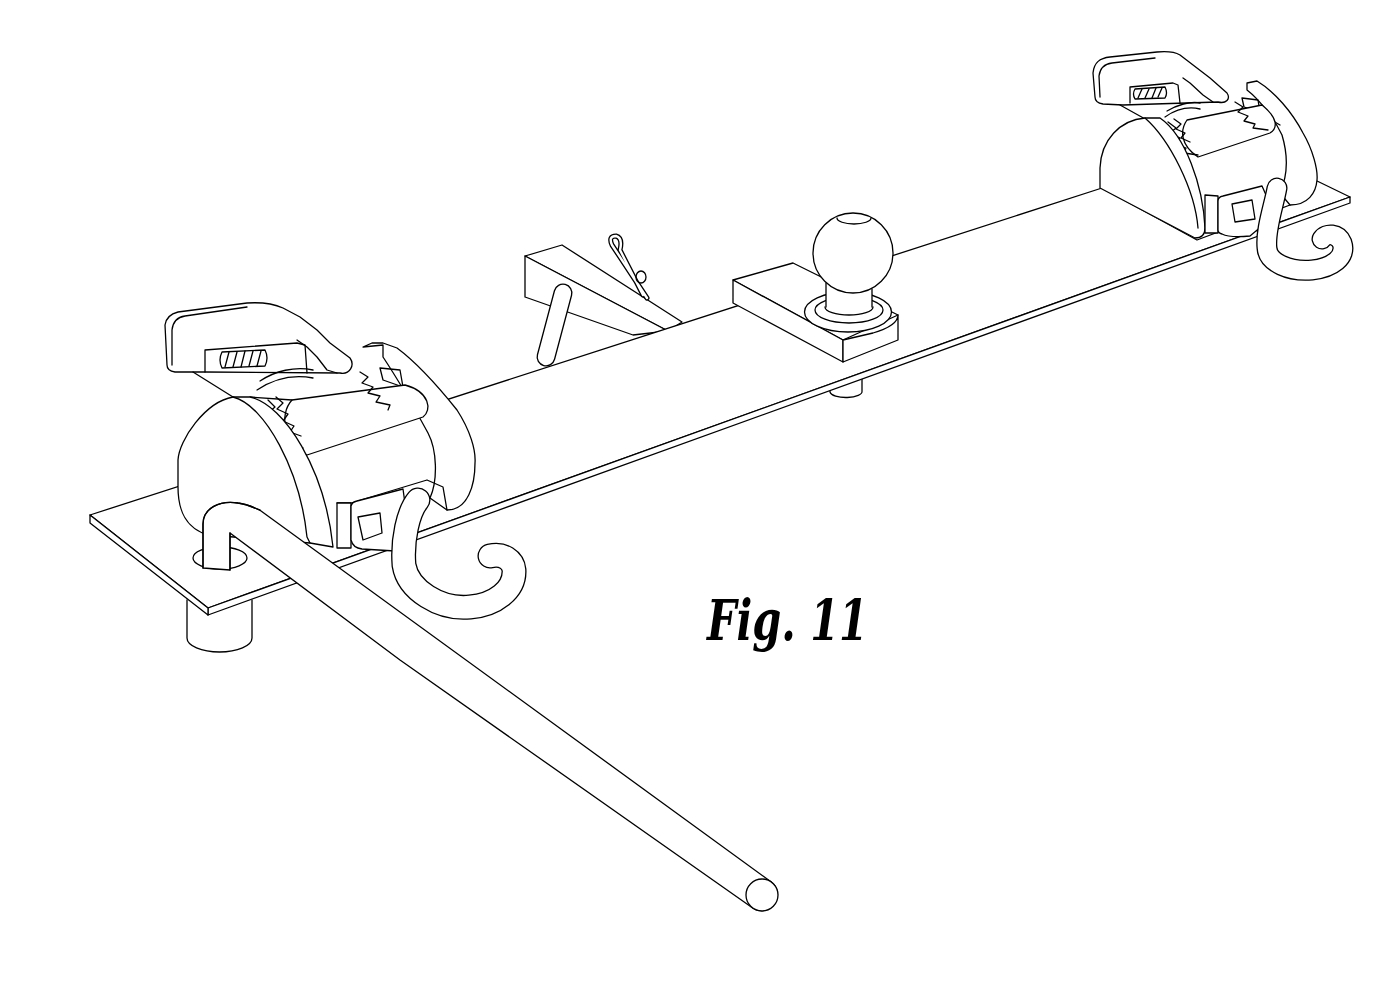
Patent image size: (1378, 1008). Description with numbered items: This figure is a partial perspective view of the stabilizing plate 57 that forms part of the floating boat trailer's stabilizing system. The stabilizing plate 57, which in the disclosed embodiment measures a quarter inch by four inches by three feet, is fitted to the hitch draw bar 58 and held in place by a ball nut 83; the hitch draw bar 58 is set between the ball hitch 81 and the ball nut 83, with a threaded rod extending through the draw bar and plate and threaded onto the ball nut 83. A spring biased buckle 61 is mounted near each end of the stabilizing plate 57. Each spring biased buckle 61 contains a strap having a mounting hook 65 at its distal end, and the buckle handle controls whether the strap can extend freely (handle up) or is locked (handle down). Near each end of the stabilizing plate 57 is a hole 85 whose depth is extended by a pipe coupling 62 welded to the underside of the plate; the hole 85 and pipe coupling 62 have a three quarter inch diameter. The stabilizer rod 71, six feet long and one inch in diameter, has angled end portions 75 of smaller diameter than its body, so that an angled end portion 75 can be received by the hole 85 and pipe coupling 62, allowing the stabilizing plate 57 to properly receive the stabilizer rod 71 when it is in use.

The stabilizing plate 57 is at (1058, 222).
The hitch draw bar 58 is at (558, 257).
The spring biased buckle 61 is at (403, 345).
The pipe coupling 62 is at (253, 626).
The mounting hook 65 is at (519, 568).
The stabilizer rod 71 is at (598, 770).
The angled end portion 75 is at (210, 528).
The ball hitch 81 is at (830, 235).
The ball nut 83 is at (863, 387).
The hole 85 is at (180, 552).